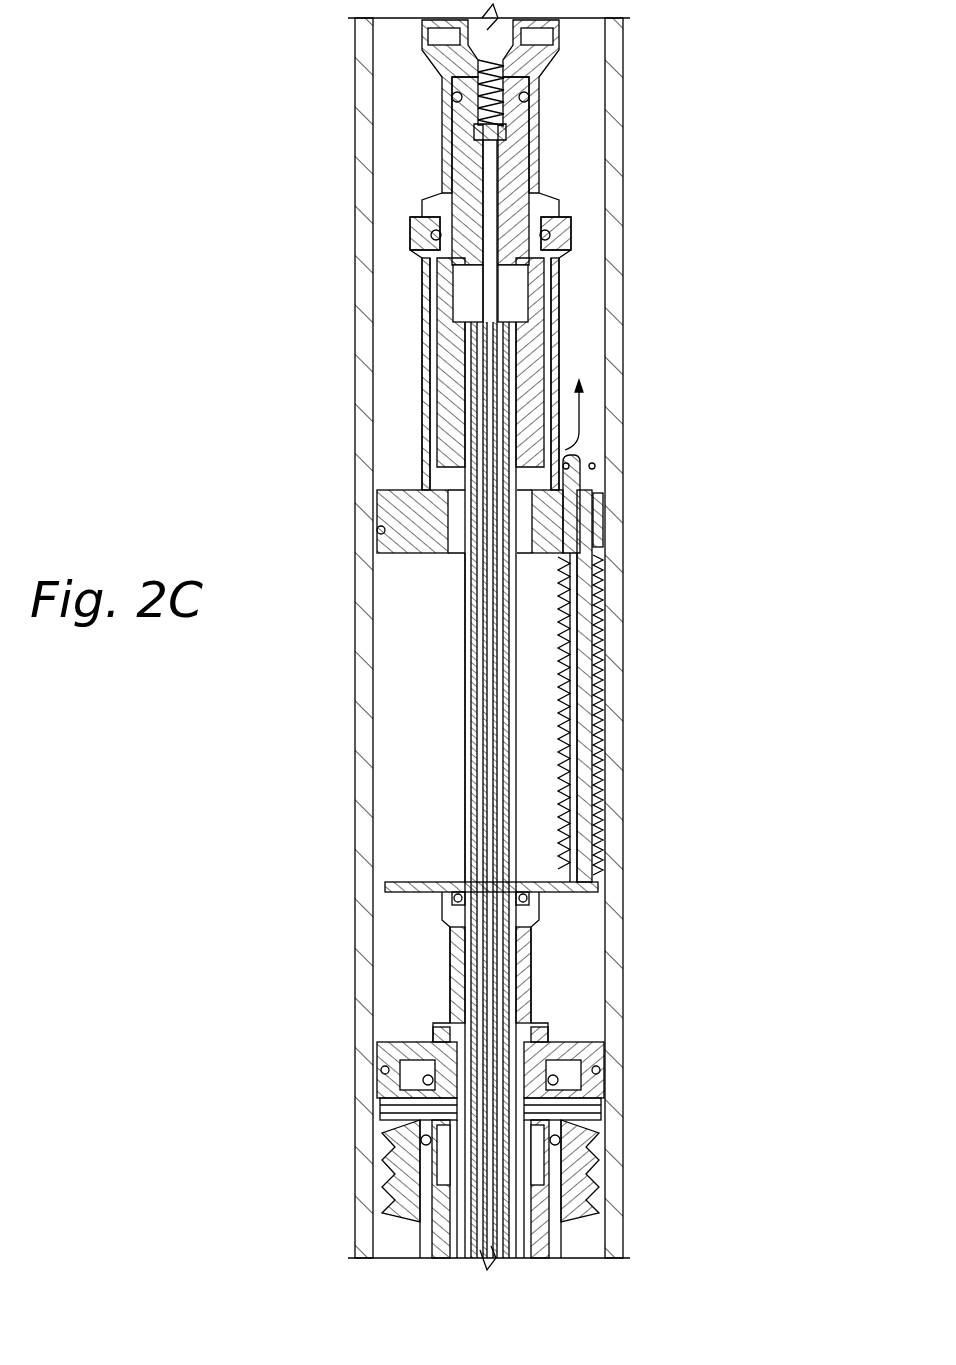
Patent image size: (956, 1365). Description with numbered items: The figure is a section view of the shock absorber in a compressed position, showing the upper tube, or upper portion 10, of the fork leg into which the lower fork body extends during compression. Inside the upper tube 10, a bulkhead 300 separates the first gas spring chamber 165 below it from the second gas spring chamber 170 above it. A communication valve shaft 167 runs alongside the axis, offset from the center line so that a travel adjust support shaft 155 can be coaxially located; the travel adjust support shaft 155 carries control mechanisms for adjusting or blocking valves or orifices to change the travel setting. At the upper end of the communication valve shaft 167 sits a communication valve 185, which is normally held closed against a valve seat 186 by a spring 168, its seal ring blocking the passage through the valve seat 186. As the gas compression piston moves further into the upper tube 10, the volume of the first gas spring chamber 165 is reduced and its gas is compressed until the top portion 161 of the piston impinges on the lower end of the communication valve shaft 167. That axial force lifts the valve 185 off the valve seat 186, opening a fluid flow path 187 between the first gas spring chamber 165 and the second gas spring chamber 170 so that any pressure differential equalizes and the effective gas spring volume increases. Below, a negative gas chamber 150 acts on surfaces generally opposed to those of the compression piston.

The upper portion 10 is at (623, 247).
The second gas spring chamber 170 is at (580, 152).
The travel adjust support shaft 155 is at (515, 670).
The bulkhead 300 is at (378, 506).
The communication valve 185 is at (590, 487).
The valve seat 186 is at (600, 510).
The fluid flow path 187 is at (579, 409).
The communication valve shaft 167 is at (583, 724).
The spring 168 is at (600, 787).
The first gas spring chamber 165 is at (420, 745).
The top portion 161 is at (592, 889).
The negative gas chamber 150 is at (600, 1052).